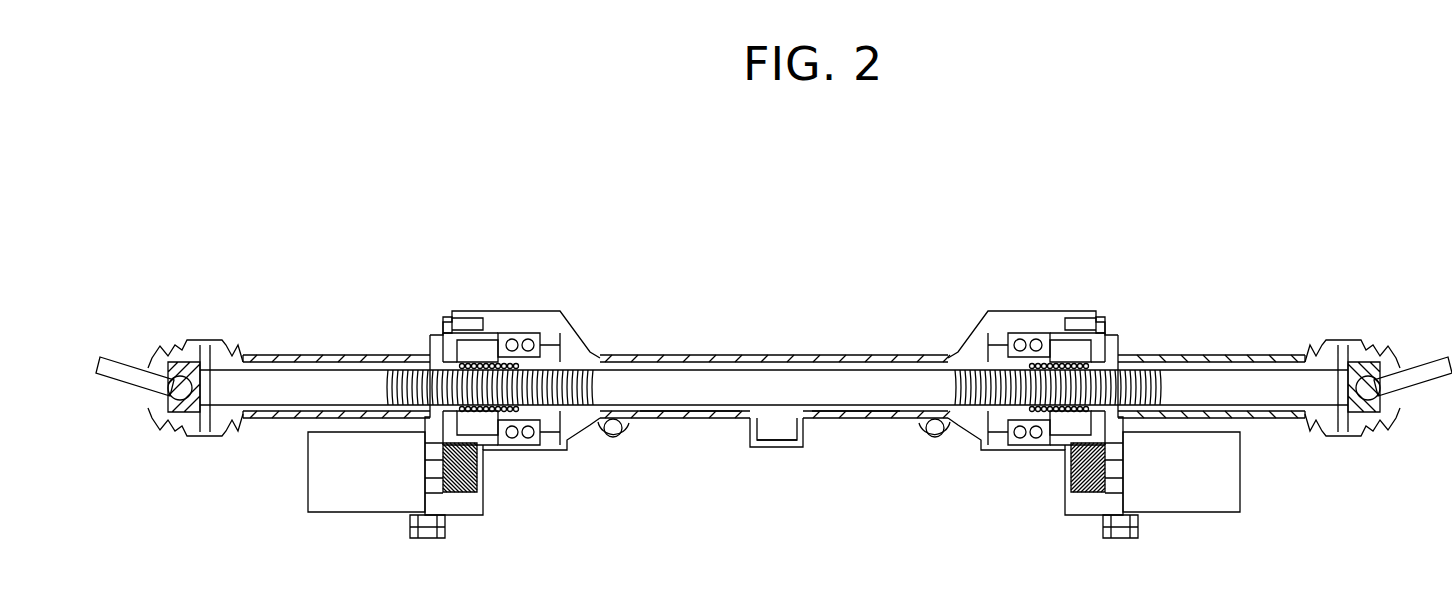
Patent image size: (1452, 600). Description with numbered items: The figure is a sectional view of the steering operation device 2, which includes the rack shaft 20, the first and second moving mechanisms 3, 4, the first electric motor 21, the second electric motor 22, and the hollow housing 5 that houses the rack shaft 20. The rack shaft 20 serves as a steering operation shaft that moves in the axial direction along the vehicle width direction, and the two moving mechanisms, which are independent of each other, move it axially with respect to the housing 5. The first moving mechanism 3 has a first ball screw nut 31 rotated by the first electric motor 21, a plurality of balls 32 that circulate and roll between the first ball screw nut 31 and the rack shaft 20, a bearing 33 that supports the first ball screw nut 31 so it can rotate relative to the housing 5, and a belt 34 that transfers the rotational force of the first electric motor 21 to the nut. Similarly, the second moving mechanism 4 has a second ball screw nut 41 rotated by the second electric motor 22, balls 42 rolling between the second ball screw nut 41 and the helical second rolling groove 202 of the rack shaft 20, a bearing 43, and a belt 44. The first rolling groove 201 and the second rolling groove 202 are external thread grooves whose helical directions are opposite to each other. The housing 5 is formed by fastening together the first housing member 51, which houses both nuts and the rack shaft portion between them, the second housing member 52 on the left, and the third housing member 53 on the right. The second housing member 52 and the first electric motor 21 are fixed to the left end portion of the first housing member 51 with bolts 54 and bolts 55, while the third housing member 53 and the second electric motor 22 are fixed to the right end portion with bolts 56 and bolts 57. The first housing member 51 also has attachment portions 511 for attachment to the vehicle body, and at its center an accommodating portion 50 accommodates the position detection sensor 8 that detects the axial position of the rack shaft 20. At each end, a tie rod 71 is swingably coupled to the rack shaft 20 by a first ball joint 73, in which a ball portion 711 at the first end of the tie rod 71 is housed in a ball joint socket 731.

The steering operation device 2 is at (231, 225).
The housing 5 is at (743, 321).
The rack shaft 20 is at (778, 366).
The first rolling groove 201 is at (408, 370).
The second rolling groove 202 is at (1126, 368).
The first moving mechanism 3 is at (561, 442).
The first ball screw nut 31 is at (491, 340).
The balls 32 is at (560, 348).
The bearing 33 is at (530, 337).
The belt 34 is at (486, 460).
The second moving mechanism 4 is at (994, 455).
The second ball screw nut 41 is at (1060, 343).
The balls 42 is at (996, 354).
The bearing 43 is at (1017, 338).
The belt 44 is at (1068, 452).
The position detection sensor 8 is at (781, 432).
The accommodating portion 50 is at (761, 451).
The first housing member 51 is at (705, 420).
The second housing member 52 is at (340, 356).
The third housing member 53 is at (1206, 356).
The bolts 54 is at (445, 318).
The bolts 55 is at (441, 530).
The bolts 56 is at (1101, 318).
The bolts 57 is at (1106, 528).
The attachment portions 511 is at (609, 446).
The first electric motor 21 is at (360, 513).
The second electric motor 22 is at (1186, 513).
The tie rod 71 is at (106, 377).
The ball portion 711 is at (172, 400).
The first ball joint 73 is at (206, 344).
The ball joint socket 731 is at (181, 400).